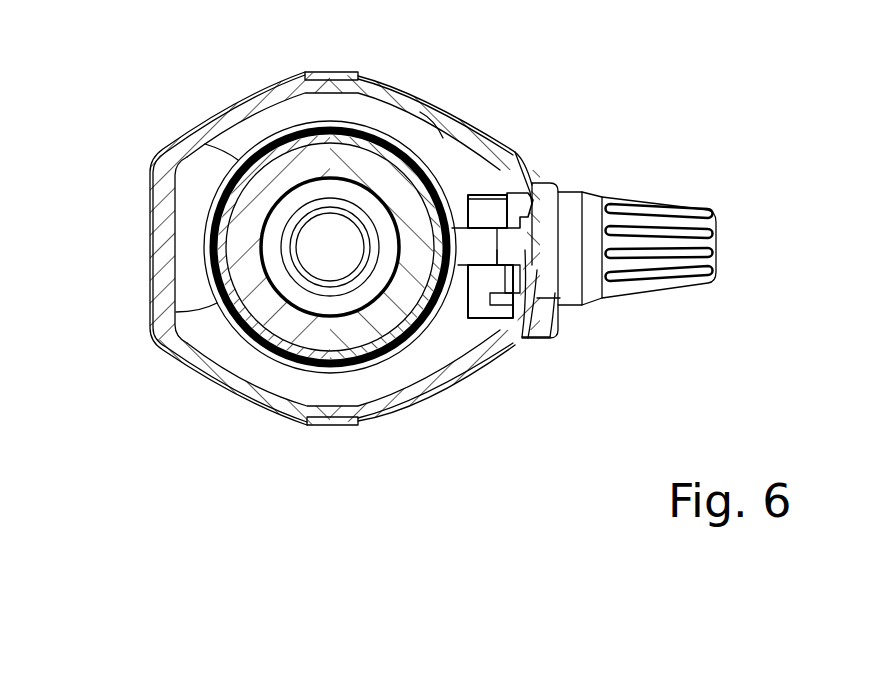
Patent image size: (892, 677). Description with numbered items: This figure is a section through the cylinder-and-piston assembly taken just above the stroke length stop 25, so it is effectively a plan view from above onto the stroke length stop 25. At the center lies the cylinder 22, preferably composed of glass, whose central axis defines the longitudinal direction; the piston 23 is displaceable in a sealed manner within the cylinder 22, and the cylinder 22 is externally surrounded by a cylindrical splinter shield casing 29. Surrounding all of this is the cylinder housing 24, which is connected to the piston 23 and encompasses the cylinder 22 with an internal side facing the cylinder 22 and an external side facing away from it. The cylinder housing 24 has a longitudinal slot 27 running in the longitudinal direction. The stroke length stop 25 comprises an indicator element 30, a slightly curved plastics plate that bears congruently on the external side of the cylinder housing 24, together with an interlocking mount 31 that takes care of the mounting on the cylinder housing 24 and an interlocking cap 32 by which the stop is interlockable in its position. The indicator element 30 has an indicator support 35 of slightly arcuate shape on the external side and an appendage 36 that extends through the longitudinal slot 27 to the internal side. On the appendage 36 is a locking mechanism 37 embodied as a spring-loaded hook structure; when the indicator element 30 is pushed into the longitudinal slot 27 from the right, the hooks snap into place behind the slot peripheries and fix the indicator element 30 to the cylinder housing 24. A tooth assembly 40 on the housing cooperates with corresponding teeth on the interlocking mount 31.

The cylinder 22 is at (248, 300).
The piston 23 is at (300, 200).
The cylinder housing 24 is at (162, 250).
The stroke length stop 25 is at (633, 117).
The longitudinal slot 27 is at (528, 192).
The splinter shield casing 29 is at (172, 153).
The indicator element 30 is at (550, 178).
The interlocking mount 31 is at (472, 194).
The interlocking cap 32 is at (650, 193).
The indicator support 35 is at (557, 340).
The appendage 36 is at (530, 343).
The locking mechanism 37 is at (512, 345).
The tooth assembly 40 is at (505, 193).